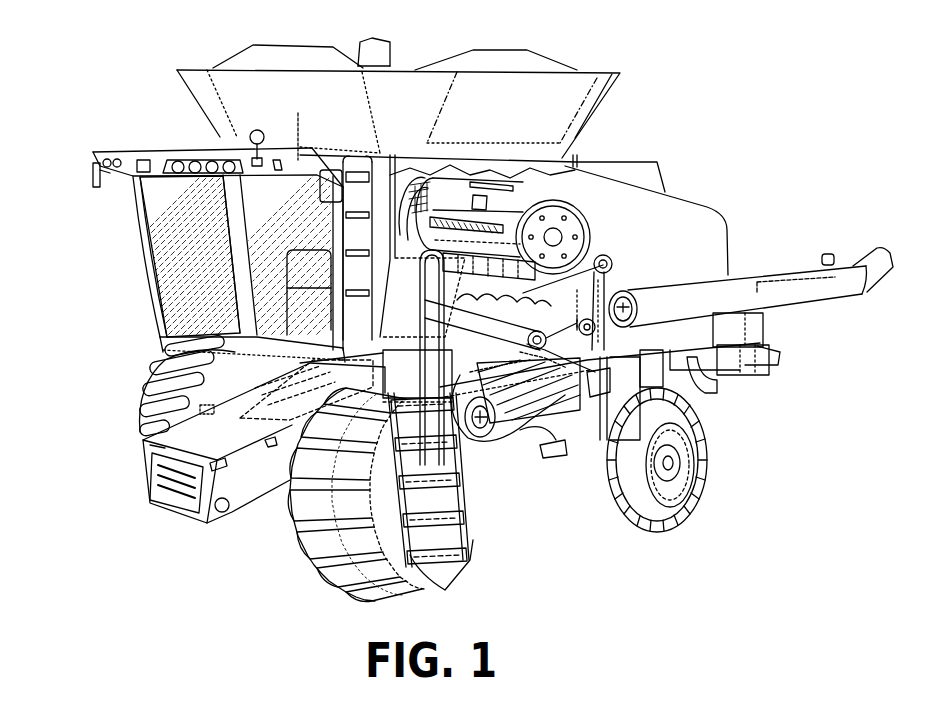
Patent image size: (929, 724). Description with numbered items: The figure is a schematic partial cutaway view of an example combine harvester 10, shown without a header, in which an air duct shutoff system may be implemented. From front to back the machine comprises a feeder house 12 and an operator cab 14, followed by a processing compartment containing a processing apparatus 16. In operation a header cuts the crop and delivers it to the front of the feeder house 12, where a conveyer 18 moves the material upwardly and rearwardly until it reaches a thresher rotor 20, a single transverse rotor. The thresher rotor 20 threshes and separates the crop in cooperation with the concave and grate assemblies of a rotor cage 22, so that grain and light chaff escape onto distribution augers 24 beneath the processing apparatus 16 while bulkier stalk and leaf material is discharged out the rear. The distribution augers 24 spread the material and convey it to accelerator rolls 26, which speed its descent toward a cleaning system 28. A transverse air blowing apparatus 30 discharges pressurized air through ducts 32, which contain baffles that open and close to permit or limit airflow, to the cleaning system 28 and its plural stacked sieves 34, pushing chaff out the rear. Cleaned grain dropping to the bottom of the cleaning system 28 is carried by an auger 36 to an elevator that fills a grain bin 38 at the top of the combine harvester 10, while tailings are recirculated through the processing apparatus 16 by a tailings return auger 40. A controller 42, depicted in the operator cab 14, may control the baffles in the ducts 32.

The combine harvester 10 is at (96, 60).
The feeder house 12 is at (143, 462).
The operator cab 14 is at (173, 338).
The processing apparatus 16 is at (572, 180).
The conveyer 18 is at (395, 362).
The thresher rotor 20 is at (562, 238).
The rotor cage 22 is at (522, 205).
The distribution augers 24 is at (604, 268).
The accelerator rolls 26 is at (566, 362).
The cleaning system 28 is at (505, 452).
The air blowing apparatus 30 is at (330, 526).
The ducts 32 is at (477, 377).
The sieves 34 is at (668, 522).
The auger 36 is at (540, 442).
The grain bin 38 is at (177, 82).
The tailings return auger 40 is at (553, 442).
The controller 42 is at (193, 297).